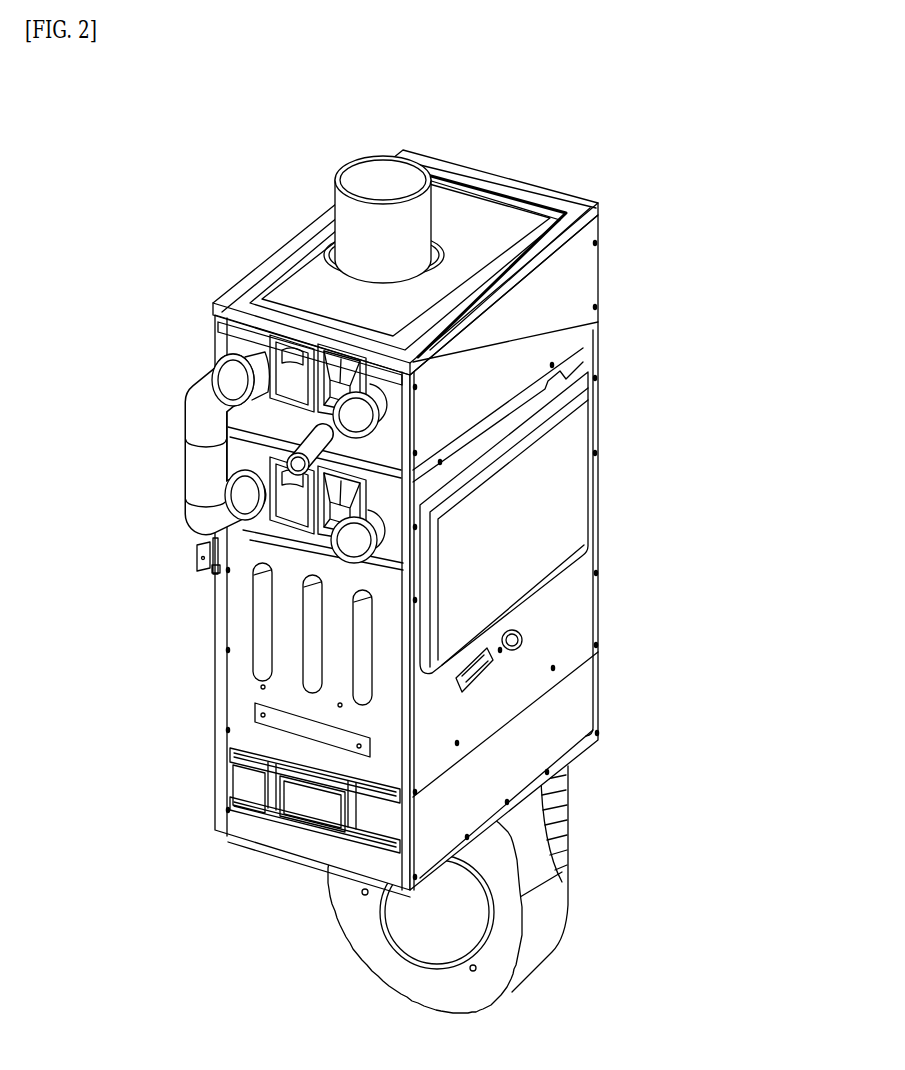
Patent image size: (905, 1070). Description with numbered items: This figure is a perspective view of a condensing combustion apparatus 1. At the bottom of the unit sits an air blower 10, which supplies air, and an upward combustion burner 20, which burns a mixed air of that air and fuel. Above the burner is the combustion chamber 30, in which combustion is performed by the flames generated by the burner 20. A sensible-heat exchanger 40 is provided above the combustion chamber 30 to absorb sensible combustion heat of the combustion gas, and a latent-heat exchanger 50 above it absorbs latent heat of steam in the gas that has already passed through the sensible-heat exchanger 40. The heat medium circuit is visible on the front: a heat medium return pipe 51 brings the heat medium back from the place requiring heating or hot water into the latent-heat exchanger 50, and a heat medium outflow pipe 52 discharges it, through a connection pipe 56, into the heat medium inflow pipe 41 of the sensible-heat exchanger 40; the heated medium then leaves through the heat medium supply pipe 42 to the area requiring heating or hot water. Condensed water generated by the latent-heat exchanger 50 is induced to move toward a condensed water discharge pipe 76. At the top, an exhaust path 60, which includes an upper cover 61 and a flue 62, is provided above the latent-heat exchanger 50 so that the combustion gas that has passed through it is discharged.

The condensing combustion apparatus 1 is at (172, 203).
The air blower 10 is at (332, 934).
The upward combustion burner 20 is at (233, 789).
The combustion chamber 30 is at (233, 654).
The sensible-heat exchanger 40 is at (289, 505).
The heat medium inflow pipe 41 is at (258, 486).
The heat medium supply pipe 42 is at (408, 534).
The latent-heat exchanger 50 is at (289, 386).
The heat medium return pipe 51 is at (410, 400).
The heat medium outflow pipe 52 is at (238, 343).
The connection pipe 56 is at (200, 410).
The exhaust path 60 is at (405, 228).
The upper cover 61 is at (488, 205).
The flue 62 is at (377, 170).
The condensed water discharge pipe 76 is at (290, 462).